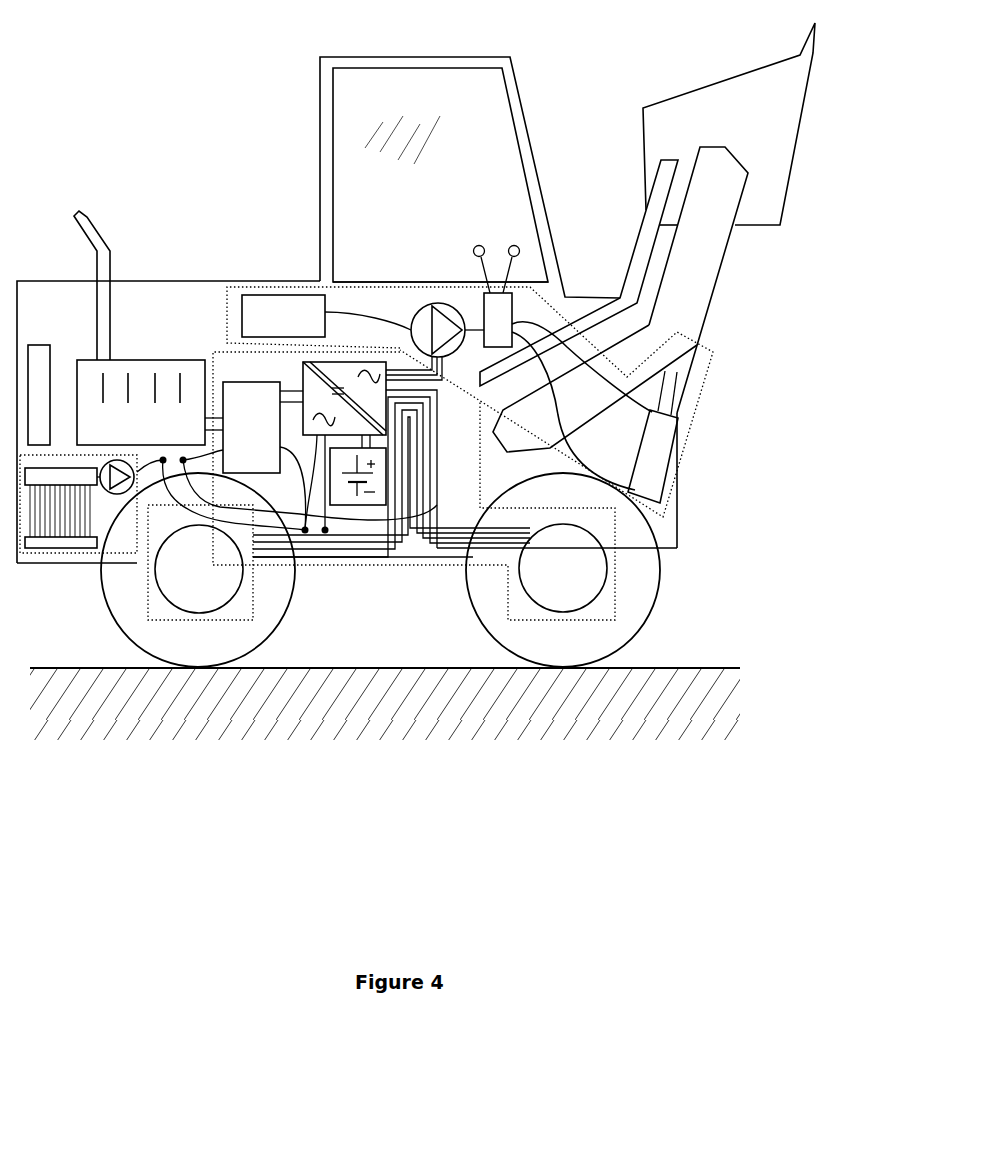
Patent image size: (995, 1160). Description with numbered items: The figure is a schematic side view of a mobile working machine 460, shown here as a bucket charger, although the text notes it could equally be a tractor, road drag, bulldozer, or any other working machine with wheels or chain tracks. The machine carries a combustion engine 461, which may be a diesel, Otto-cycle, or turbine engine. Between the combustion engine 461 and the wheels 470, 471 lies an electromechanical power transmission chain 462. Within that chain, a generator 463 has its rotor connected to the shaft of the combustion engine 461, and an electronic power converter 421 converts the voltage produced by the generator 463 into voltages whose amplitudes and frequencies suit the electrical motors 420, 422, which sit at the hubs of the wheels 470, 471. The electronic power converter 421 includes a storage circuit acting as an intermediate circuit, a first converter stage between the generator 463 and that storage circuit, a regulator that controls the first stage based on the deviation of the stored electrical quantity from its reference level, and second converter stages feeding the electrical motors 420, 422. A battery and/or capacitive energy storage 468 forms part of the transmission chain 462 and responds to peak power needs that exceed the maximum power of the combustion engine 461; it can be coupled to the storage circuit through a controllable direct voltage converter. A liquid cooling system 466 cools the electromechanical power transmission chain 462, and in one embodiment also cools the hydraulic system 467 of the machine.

The mobile working machine 460 is at (257, 125).
The combustion engine 461 is at (150, 431).
The generator 463 is at (265, 464).
The electronic power converter 421 is at (300, 366).
The battery and/or capacitive energy storage 468 is at (357, 505).
The liquid cooling system 466 is at (60, 555).
The electromechanical power transmission chain 462 is at (422, 567).
The hydraulic system 467 is at (686, 421).
The electrical motor 420 is at (216, 595).
The electrical motor 422 is at (579, 595).
The wheel 470 is at (216, 648).
The wheel 471 is at (579, 648).